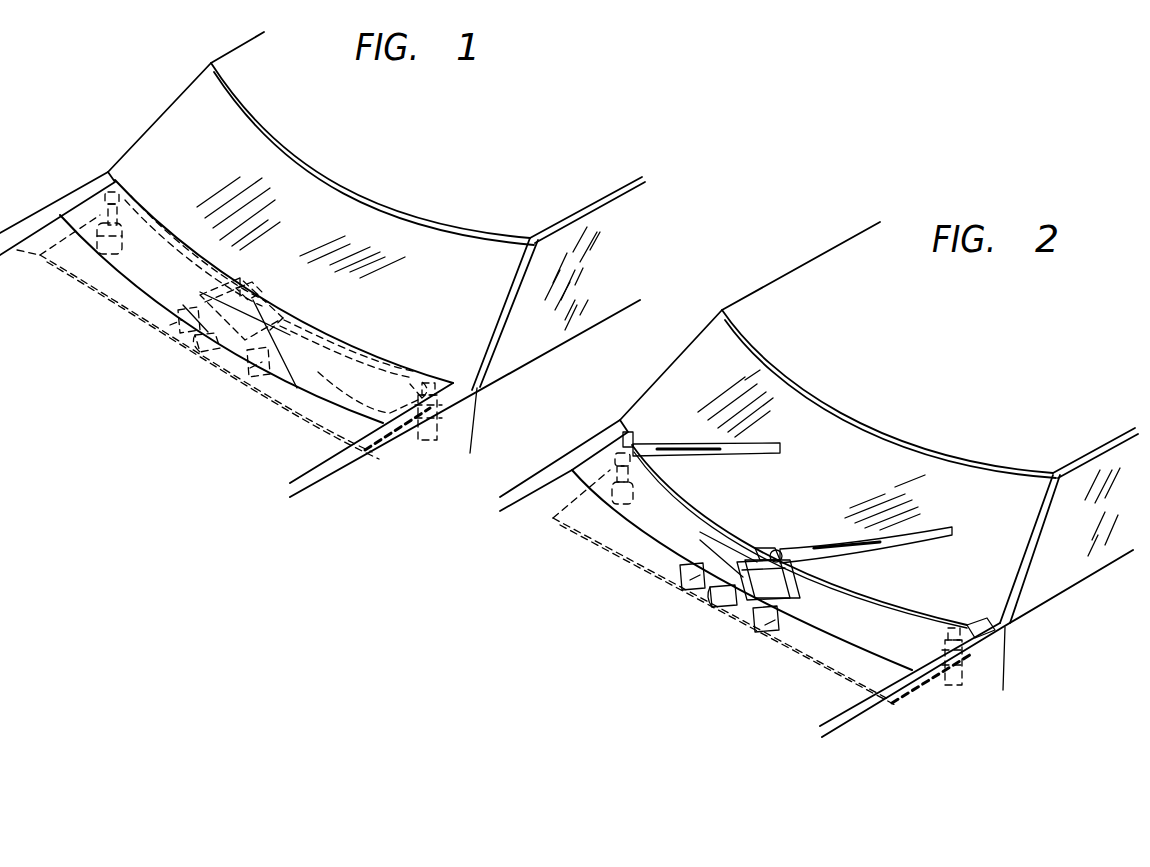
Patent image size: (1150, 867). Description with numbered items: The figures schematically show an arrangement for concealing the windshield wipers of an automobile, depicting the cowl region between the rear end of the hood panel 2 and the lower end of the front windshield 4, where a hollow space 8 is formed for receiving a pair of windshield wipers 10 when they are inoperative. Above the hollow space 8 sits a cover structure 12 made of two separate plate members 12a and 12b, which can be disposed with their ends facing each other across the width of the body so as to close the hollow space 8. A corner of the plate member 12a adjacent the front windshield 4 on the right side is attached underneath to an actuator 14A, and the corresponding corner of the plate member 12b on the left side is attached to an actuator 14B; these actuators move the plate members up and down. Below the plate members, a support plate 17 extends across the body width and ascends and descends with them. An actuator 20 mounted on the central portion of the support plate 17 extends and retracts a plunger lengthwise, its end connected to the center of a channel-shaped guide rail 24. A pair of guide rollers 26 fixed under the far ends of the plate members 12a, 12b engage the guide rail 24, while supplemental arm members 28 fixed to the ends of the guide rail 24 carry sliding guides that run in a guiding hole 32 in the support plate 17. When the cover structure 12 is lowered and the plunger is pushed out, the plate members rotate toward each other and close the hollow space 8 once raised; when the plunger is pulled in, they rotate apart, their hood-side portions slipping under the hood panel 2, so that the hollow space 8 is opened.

In FIG. 1, the hood panel 2 is at (298, 472).
In FIG. 2, the hood panel 2 is at (832, 705).
In FIG. 1, the front windshield 4 is at (138, 153).
In FIG. 2, the front windshield 4 is at (647, 410).
In FIG. 1, the hollow space 8 is at (173, 233).
In FIG. 2, the hollow space 8 is at (853, 592).
In FIG. 1, the windshield wipers 10 is at (143, 220).
In FIG. 2, the windshield wipers 10 is at (772, 443).
In FIG. 1, the cover structure 12 is at (258, 301).
In FIG. 2, the cover structure 12 is at (767, 528).
In FIG. 1, the plate member 12a is at (183, 283).
In FIG. 2, the plate member 12a is at (705, 530).
In FIG. 1, the plate member 12b is at (293, 352).
In FIG. 2, the plate member 12b is at (806, 593).
In FIG. 1, the actuator 14A is at (95, 268).
In FIG. 2, the actuator 14A is at (597, 533).
In FIG. 1, the actuator 14B is at (433, 440).
In FIG. 2, the actuator 14B is at (953, 680).
In FIG. 1, the support plate 17 is at (273, 403).
In FIG. 2, the support plate 17 is at (627, 560).
In FIG. 1, the actuator 20 is at (207, 352).
In FIG. 2, the actuator 20 is at (722, 597).
In FIG. 1, the guide rail 24 is at (257, 317).
In FIG. 2, the guide rail 24 is at (703, 583).
In FIG. 1, the guide rollers 26 is at (260, 300).
In FIG. 2, the guide rollers 26 is at (757, 540).
In FIG. 1, the supplemental arm members 28 is at (176, 310).
In FIG. 2, the supplemental arm members 28 is at (673, 583).
In FIG. 1, the guiding hole 32 is at (163, 333).
In FIG. 2, the guiding hole 32 is at (682, 577).